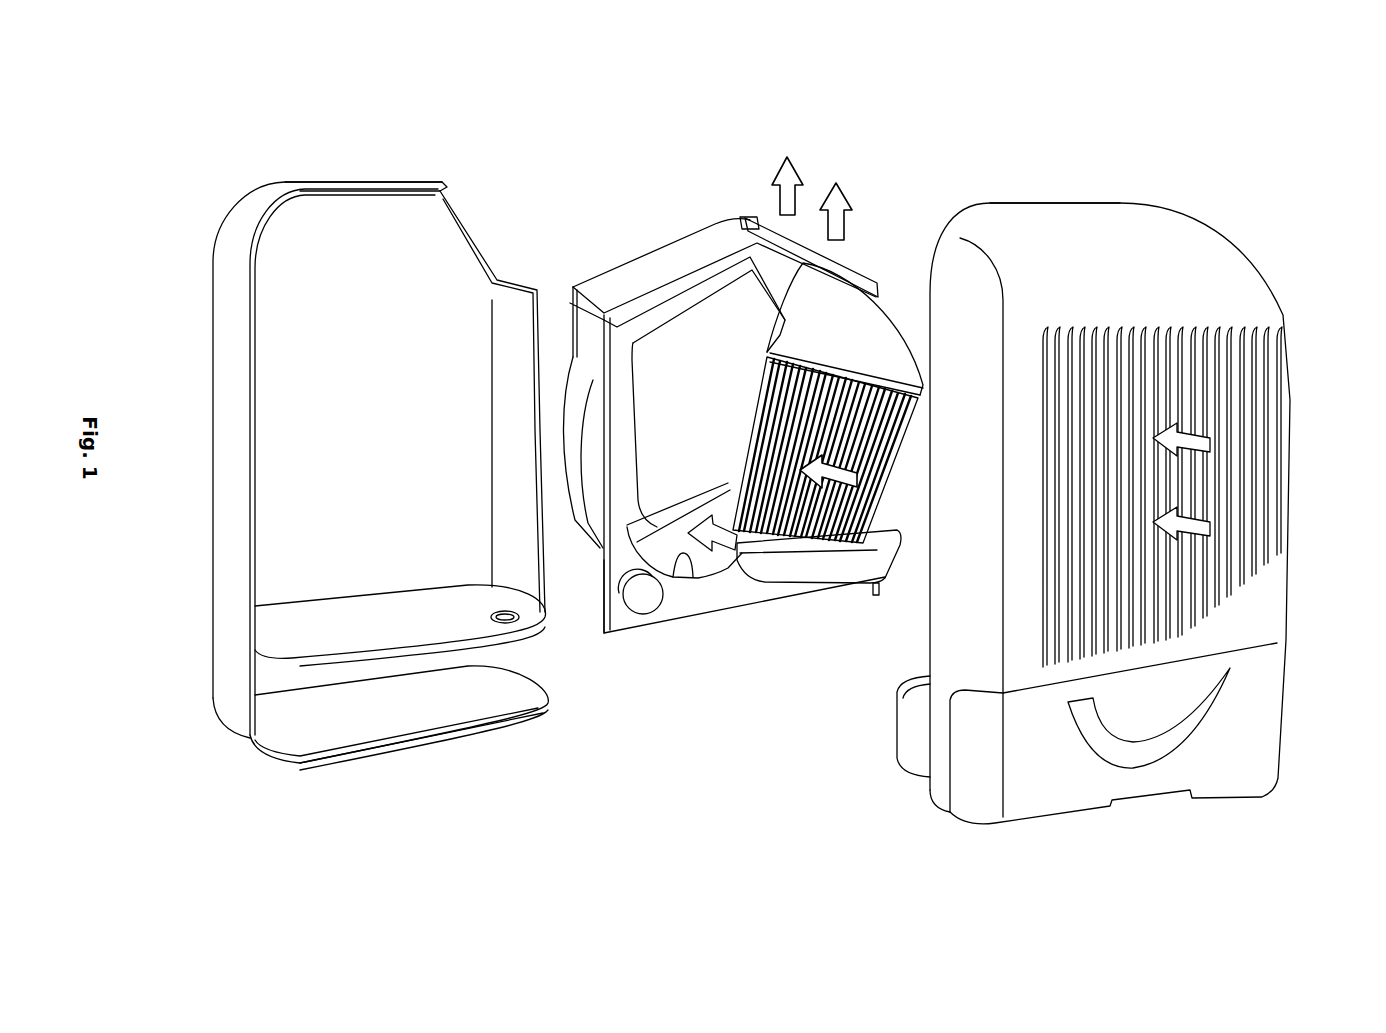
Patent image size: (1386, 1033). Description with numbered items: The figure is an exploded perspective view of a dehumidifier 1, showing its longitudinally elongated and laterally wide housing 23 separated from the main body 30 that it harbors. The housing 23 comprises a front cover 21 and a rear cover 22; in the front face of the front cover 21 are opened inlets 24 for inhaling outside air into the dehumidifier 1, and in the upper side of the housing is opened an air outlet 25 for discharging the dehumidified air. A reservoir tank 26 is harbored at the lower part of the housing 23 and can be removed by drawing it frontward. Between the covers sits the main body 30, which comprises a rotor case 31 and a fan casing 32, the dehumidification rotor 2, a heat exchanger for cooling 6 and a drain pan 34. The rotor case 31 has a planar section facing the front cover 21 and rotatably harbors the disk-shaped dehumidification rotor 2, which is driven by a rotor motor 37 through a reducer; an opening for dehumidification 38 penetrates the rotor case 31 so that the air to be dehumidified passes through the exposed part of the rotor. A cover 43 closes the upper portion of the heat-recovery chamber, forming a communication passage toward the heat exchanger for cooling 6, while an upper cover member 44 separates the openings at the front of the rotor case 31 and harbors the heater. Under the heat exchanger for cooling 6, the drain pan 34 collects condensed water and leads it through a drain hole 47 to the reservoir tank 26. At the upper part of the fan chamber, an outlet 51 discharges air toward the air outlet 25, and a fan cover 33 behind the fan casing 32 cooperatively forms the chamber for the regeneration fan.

The dehumidifier 1 is at (1205, 120).
The dehumidification rotor 2 is at (710, 565).
The heat exchanger for cooling 6 is at (875, 502).
The front cover 21 is at (1195, 233).
The rear cover 22 is at (233, 225).
The housing 23 is at (340, 183).
The inlets 24 is at (1275, 455).
The air outlet 25 is at (465, 228).
The reservoir tank 26 is at (1242, 725).
The main body 30 is at (740, 213).
The rotor case 31 is at (608, 612).
The fan casing 32 is at (603, 600).
The fan cover 33 is at (570, 497).
The drain pan 34 is at (828, 572).
The rotor motor 37 is at (640, 605).
The opening for dehumidification 38 is at (693, 580).
The cover 43 is at (690, 262).
The upper cover member 44 is at (688, 350).
The drain hole 47 is at (876, 596).
The outlet 51 is at (850, 265).